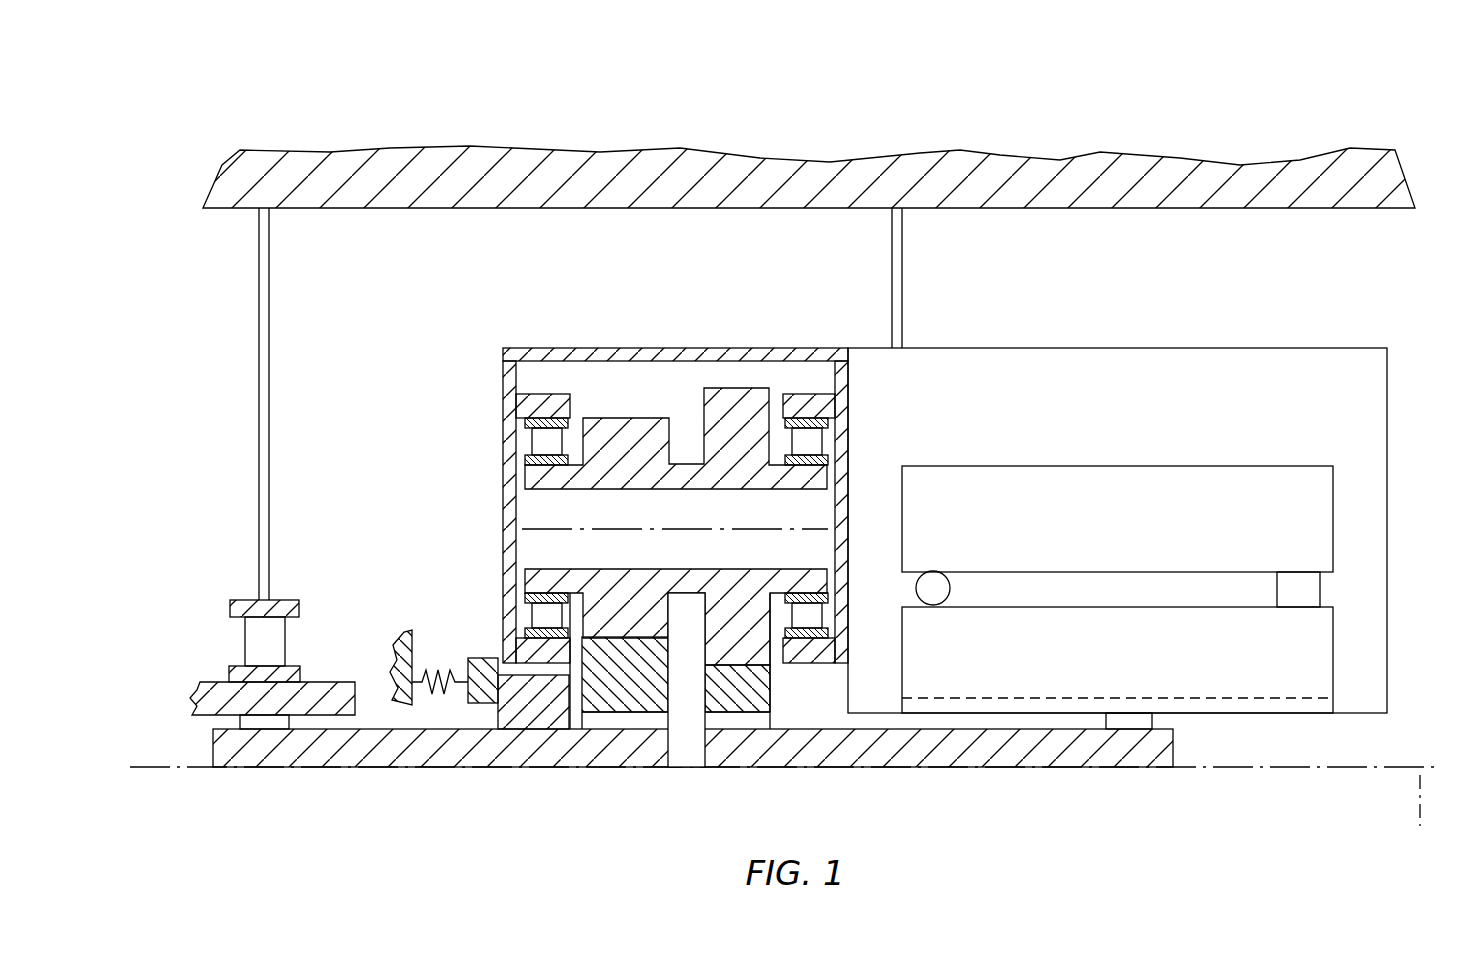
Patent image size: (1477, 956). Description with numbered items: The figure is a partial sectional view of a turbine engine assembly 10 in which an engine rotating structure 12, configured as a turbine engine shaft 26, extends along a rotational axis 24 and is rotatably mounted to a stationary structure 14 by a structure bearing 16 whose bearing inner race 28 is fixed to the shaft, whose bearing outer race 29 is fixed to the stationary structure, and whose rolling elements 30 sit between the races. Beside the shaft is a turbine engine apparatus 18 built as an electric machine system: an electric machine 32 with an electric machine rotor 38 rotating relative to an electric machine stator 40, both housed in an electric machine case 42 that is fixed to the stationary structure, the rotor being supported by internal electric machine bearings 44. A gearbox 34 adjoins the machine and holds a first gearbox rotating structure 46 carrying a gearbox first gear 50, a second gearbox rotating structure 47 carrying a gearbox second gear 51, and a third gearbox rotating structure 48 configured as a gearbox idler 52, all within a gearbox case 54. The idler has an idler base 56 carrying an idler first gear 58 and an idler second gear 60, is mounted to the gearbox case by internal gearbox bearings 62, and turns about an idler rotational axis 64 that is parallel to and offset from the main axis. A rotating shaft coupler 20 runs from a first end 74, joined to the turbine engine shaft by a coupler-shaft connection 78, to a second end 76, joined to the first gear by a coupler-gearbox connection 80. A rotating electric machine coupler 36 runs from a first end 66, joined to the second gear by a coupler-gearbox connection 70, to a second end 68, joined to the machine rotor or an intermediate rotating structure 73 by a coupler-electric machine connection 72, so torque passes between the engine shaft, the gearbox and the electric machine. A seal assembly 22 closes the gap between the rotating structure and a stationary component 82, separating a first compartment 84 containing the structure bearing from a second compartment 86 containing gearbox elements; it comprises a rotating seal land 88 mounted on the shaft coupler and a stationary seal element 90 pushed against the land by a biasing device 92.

The turbine engine assembly 10 is at (243, 125).
The engine rotating structure 12 is at (227, 682).
The stationary structure 14 is at (378, 146).
The engine rotating structure bearing 16 is at (274, 445).
The turbine engine apparatus 18 is at (1159, 511).
The rotating shaft coupler 20 is at (405, 776).
The seal assembly 22 is at (434, 667).
The rotational axis 24 is at (1412, 814).
The turbine engine shaft 26 is at (193, 690).
The bearing inner race 28 is at (301, 675).
The bearing outer race 29 is at (300, 603).
The bearing rolling elements 30 is at (286, 640).
The electric machine 32 is at (1159, 530).
The gearbox 34 is at (661, 498).
The rotating electric machine coupler 36 is at (664, 794).
The electric machine rotor 38 is at (1335, 656).
The electric machine stator 40 is at (1333, 505).
The electric machine case 42 is at (1389, 394).
The internal electric machine bearings 44 is at (915, 588).
The first gearbox rotating structure 46 is at (587, 724).
The second gearbox rotating structure 47 is at (798, 740).
The third gearbox rotating structure 48 is at (617, 450).
The gearbox first gear 50 is at (578, 690).
The gearbox second gear 51 is at (790, 730).
The gearbox idler 52 is at (617, 450).
The gearbox case 54 is at (570, 348).
The idler base 56 is at (560, 487).
The idler first gear 58 is at (628, 417).
The idler second gear 60 is at (742, 388).
The internal gearbox bearings 62 is at (522, 440).
The idler rotational axis 64 is at (640, 533).
The machine coupler first end 66 is at (700, 745).
The machine coupler second end 68 is at (1175, 746).
The coupler-gearbox connection 70 is at (774, 722).
The coupler-electric machine connection 72 is at (1160, 720).
The intermediate rotating structure 73 is at (1322, 704).
The shaft coupler first end 74 is at (664, 774).
The shaft coupler second end 76 is at (672, 745).
The coupler-shaft connection 78 is at (238, 722).
The coupler-gearbox connection 80 is at (615, 732).
The stationary component 82 is at (400, 630).
The first compartment 84 is at (298, 512).
The second compartment 86 is at (774, 690).
The rotating seal land 88 is at (505, 730).
The stationary seal element 90 is at (473, 705).
The biasing device 92 is at (464, 701).